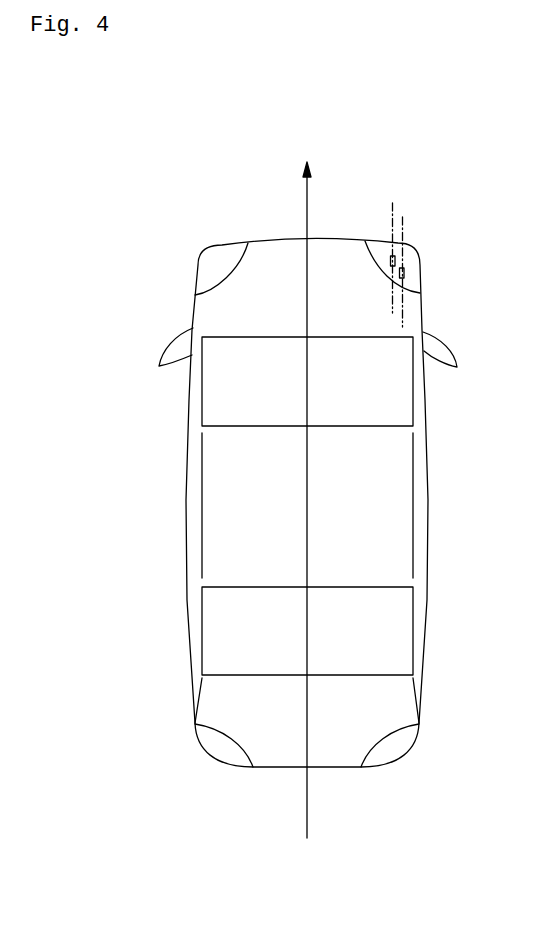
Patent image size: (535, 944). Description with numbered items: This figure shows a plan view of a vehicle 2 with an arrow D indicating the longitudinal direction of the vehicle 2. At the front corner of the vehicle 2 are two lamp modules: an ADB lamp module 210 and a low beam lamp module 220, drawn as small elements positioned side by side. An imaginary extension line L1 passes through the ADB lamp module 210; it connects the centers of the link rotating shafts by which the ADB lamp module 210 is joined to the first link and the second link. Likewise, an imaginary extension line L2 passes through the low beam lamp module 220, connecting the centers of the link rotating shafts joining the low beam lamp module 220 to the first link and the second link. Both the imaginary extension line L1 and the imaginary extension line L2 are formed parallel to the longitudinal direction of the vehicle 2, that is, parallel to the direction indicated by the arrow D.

The vehicle 2 is at (186, 467).
The arrow indicating longitudinal direction D is at (310, 487).
The imaginary extension line L1 is at (402, 218).
The imaginary extension line L2 is at (392, 208).
The ADB lamp module 210 is at (405, 276).
The low beam lamp module 220 is at (390, 261).